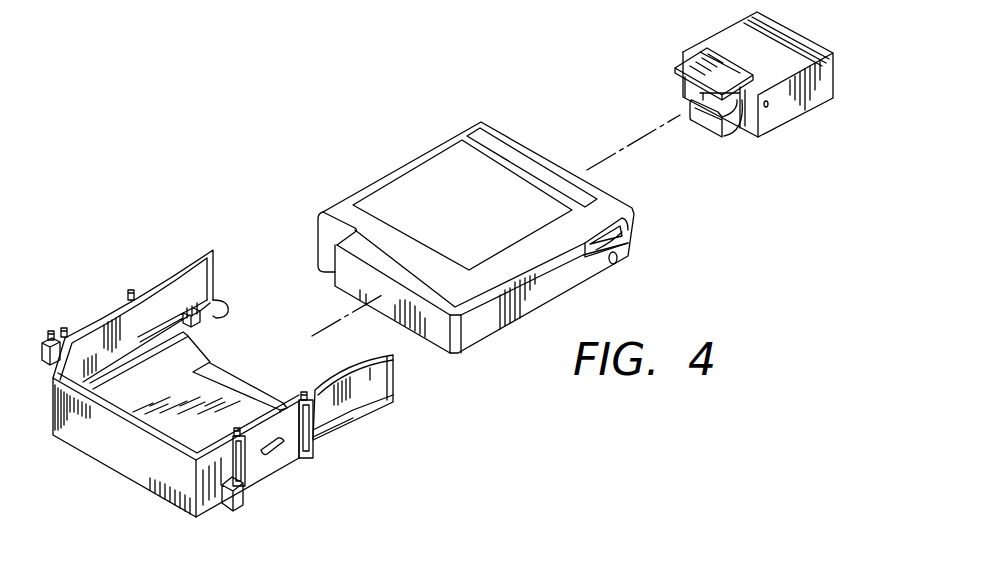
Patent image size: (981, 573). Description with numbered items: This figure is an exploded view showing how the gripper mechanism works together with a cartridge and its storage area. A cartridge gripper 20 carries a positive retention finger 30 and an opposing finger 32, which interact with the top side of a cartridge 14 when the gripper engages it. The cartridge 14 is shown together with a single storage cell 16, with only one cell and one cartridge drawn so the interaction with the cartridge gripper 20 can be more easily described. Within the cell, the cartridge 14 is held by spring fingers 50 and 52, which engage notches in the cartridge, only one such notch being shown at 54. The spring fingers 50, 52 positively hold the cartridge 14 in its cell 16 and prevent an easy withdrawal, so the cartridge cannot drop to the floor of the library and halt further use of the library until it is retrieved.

The cartridge 14 is at (485, 328).
The storage cell 16 is at (268, 463).
The cartridge gripper 20 is at (772, 123).
The positive retention finger 30 is at (704, 135).
The opposing finger 32 is at (703, 55).
The spring finger 50 is at (223, 312).
The spring finger 52 is at (368, 407).
The notch 54 is at (614, 265).